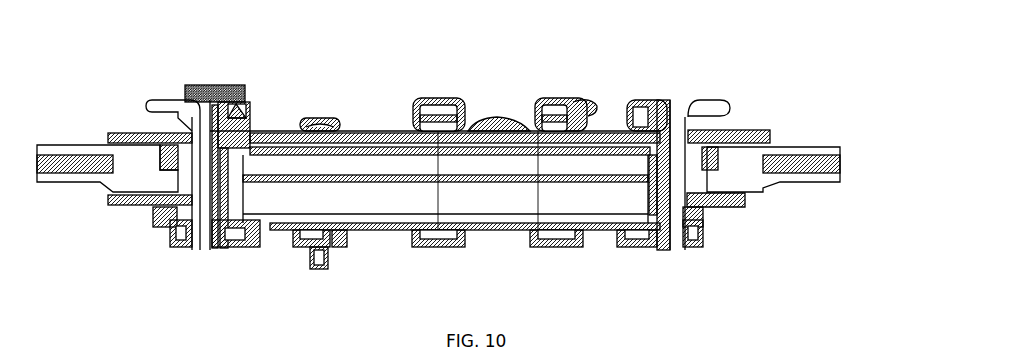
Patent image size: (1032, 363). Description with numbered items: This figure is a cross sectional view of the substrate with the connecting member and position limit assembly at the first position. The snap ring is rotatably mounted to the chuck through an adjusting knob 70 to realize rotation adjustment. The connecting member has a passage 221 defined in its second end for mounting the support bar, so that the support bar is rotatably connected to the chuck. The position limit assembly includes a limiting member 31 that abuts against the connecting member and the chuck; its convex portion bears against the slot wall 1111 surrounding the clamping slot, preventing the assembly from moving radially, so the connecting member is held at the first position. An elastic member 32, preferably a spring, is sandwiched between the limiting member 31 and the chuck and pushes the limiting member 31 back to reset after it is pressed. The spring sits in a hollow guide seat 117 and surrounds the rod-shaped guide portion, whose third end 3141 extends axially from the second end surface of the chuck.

The adjusting knob 70 is at (208, 86).
The limiting member 31 is at (705, 98).
The passage 221 is at (833, 158).
The elastic member 32 is at (713, 208).
The third end 3141 is at (330, 262).
The guide seat 117 is at (453, 237).
The slot wall 1111 is at (647, 187).